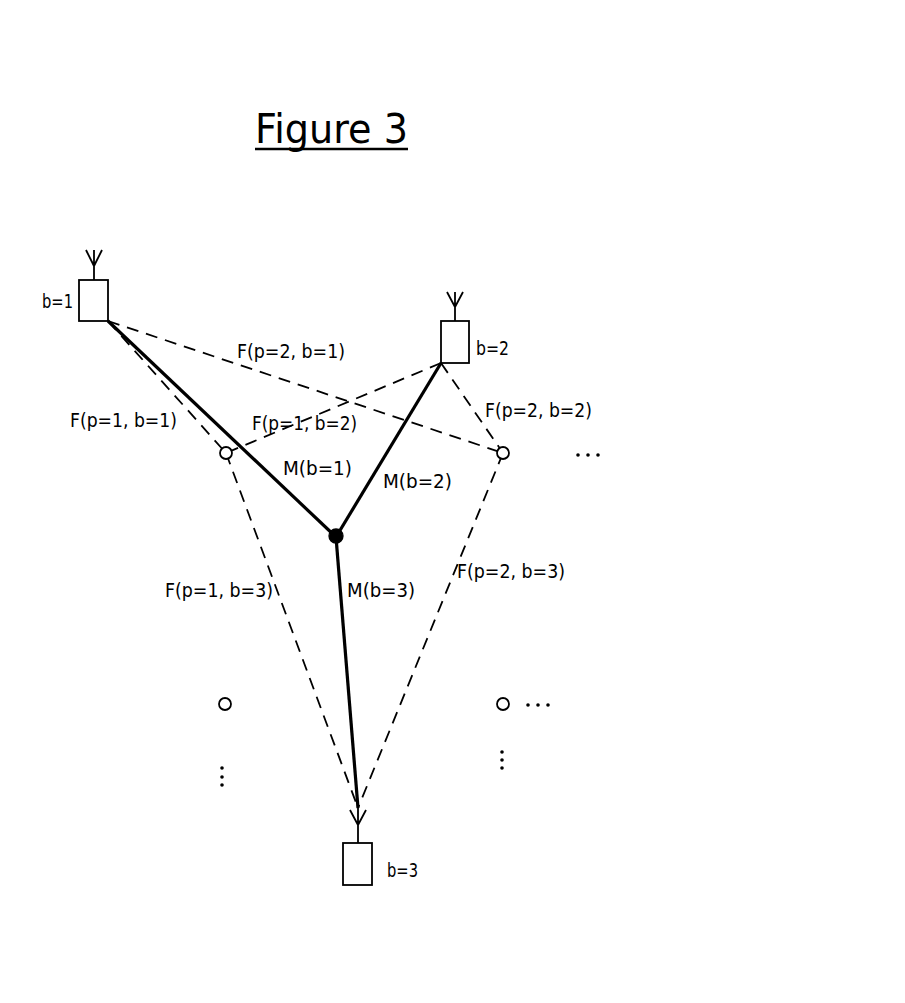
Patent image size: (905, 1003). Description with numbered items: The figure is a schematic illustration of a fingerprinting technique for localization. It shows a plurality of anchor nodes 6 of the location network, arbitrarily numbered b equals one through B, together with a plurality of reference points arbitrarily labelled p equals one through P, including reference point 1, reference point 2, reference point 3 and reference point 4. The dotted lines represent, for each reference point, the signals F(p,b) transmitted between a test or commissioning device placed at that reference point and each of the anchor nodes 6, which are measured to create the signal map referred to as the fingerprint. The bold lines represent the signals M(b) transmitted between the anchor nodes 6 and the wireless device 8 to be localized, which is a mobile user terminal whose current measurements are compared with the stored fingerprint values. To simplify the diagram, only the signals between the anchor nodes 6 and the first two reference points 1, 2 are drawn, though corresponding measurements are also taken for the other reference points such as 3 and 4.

The anchor node 6 is at (108, 291).
The wireless device 8 is at (343, 535).
The user equipment position p= 1 is at (207, 461).
The user equipment position p= 2 is at (524, 458).
The user equipment position p= 3 is at (226, 718).
The user equipment position p= 4 is at (503, 718).